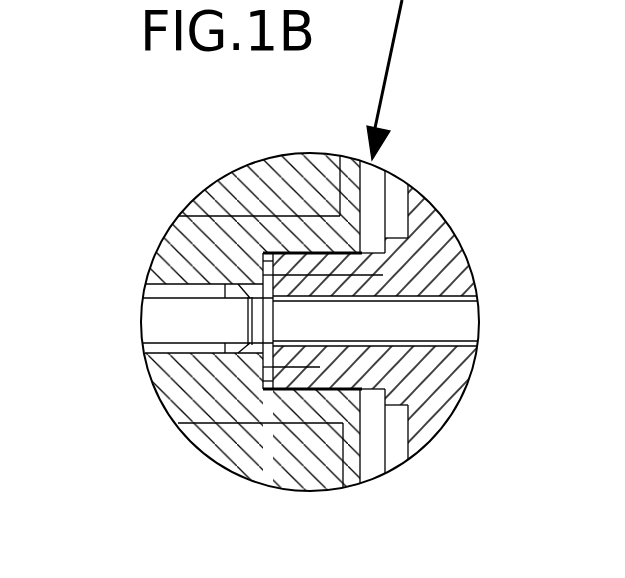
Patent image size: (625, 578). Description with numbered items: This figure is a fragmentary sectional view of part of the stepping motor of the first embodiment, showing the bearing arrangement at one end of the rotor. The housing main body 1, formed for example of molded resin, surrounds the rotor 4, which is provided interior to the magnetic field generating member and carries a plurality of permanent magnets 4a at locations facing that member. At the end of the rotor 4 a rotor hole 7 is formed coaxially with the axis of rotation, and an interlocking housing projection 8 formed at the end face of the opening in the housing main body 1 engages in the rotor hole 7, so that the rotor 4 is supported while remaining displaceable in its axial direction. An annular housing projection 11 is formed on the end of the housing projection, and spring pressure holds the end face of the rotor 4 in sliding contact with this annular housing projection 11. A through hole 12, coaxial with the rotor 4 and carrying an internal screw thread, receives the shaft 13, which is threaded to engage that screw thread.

The housing main body 1 is at (430, 378).
The rotor 4 is at (182, 250).
The permanent magnets 4a is at (223, 200).
The rotor hole 7 is at (270, 252).
The interlocking housing projection 8 is at (338, 246).
The annular housing projection 11 is at (278, 361).
The through hole 12 is at (263, 345).
The shaft 13 is at (150, 322).